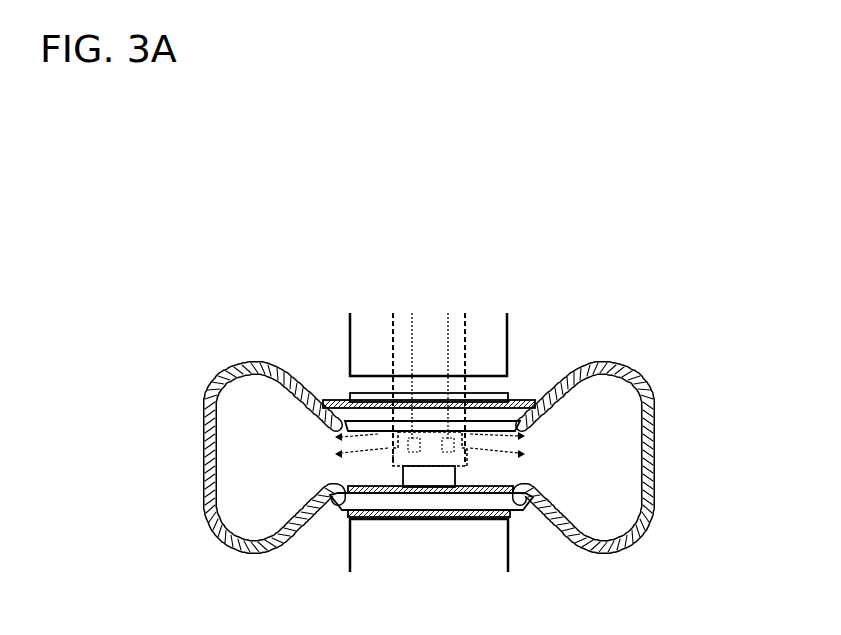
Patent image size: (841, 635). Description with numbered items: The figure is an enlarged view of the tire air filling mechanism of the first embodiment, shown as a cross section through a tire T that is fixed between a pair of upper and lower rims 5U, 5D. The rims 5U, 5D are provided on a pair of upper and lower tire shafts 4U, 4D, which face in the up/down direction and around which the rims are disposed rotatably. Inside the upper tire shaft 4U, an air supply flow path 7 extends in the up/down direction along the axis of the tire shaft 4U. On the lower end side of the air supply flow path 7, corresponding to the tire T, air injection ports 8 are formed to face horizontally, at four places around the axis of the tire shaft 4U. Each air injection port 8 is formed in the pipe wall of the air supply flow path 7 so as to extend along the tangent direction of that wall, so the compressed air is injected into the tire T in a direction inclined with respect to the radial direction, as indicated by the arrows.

The tire T is at (656, 457).
The upper tire shaft 4U is at (510, 327).
The lower tire shaft 4D is at (509, 553).
The upper rim 5U is at (518, 395).
The lower rim 5D is at (326, 510).
The air supply flow path 7 is at (450, 338).
The air injection port 8 is at (425, 440).